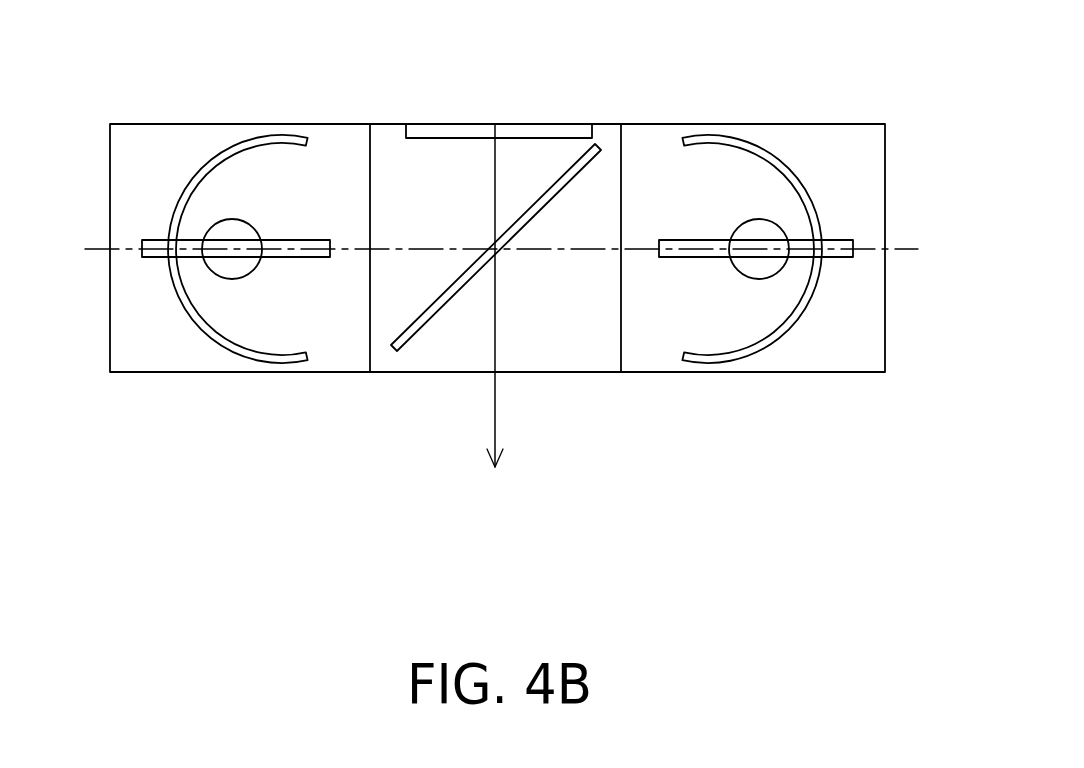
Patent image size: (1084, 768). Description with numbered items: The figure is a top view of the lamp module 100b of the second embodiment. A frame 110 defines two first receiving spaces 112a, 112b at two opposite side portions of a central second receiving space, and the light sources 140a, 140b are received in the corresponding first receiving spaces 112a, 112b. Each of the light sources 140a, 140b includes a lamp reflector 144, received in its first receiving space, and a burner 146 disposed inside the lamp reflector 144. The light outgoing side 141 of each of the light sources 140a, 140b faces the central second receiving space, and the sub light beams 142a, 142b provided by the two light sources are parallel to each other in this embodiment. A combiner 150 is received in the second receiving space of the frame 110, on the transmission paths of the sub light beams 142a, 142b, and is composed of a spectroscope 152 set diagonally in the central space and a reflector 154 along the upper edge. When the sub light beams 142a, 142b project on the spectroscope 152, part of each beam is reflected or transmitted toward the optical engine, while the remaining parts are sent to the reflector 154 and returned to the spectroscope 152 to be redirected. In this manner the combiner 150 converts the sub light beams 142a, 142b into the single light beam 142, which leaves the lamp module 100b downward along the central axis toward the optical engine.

The lamp module 100b is at (932, 588).
The frame 110 is at (497, 312).
The first receiving space 112a is at (775, 292).
The first receiving space 112b is at (225, 301).
The light source 140a is at (830, 477).
The light source 140b is at (228, 477).
The light outgoing side 141 is at (307, 317).
The light beam 142 is at (496, 393).
The sub light beam 142a is at (593, 250).
The sub light beam 142b is at (367, 243).
The lamp reflector 144 is at (497, 360).
The burner 146 is at (495, 349).
The combiner 150 is at (642, 52).
The spectroscope 152 is at (593, 143).
The reflector 154 is at (553, 134).